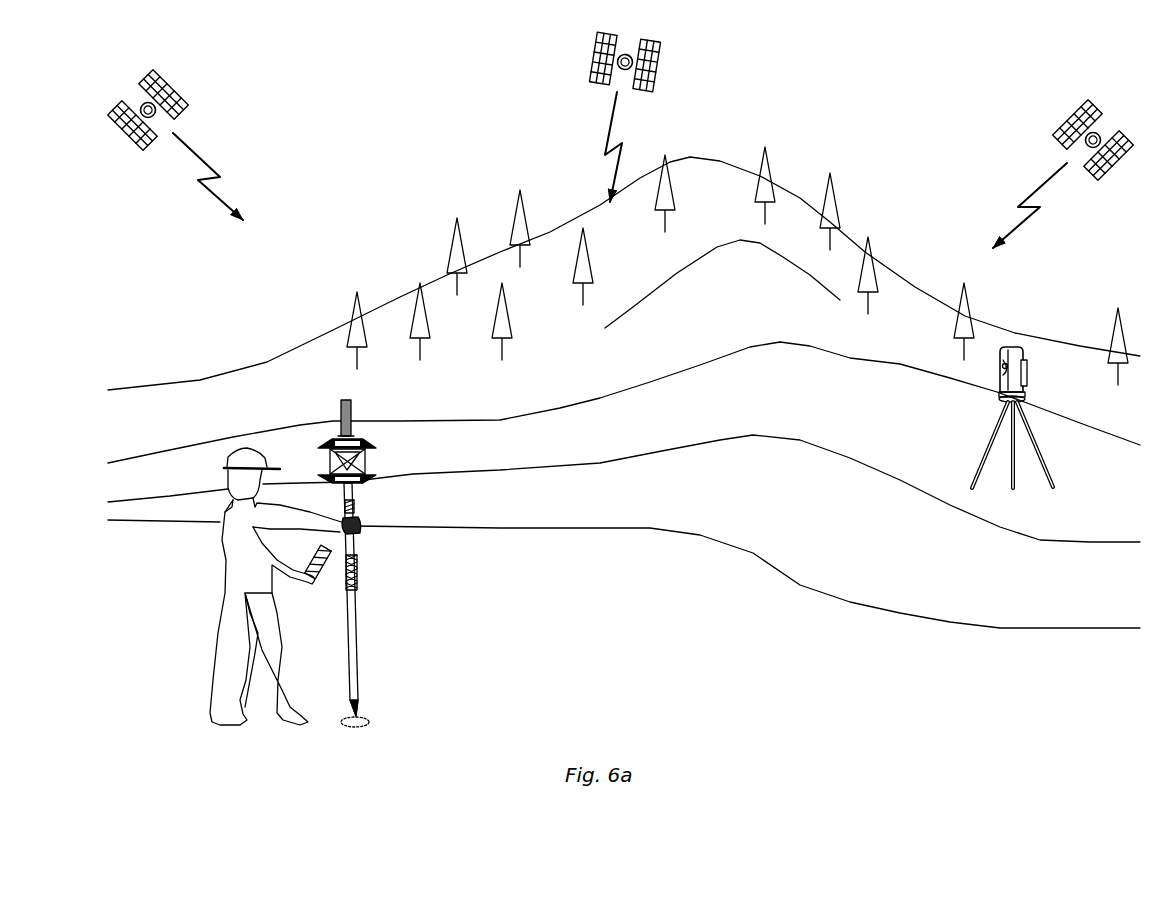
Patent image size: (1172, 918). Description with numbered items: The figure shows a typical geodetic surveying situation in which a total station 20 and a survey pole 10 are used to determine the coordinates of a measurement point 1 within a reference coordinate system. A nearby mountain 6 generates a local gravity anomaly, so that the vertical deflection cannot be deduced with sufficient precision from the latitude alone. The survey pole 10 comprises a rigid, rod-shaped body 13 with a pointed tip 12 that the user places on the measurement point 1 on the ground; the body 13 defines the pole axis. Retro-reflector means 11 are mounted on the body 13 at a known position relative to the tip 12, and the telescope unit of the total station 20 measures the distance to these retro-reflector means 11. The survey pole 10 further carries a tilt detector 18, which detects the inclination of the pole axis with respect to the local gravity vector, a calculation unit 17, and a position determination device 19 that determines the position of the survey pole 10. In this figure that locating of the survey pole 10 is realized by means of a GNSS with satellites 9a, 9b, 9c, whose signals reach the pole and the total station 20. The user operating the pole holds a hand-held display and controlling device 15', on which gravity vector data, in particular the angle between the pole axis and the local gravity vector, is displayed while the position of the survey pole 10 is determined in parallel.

The measurement point 1 is at (305, 746).
The mountain 6 is at (624, 253).
The satellite 9a is at (193, 141).
The satellite 9b is at (576, 117).
The satellite 9c is at (1054, 163).
The survey pole 10 is at (368, 537).
The retro-reflector means 11 is at (378, 462).
The pointed tip 12 is at (394, 684).
The rod-shaped body 13 is at (390, 599).
The hand-held controller 15' is at (375, 559).
The calculation unit 17 is at (392, 513).
The tilt detector 18 is at (392, 576).
The position determination device 19 is at (305, 408).
The total station 20 is at (975, 417).